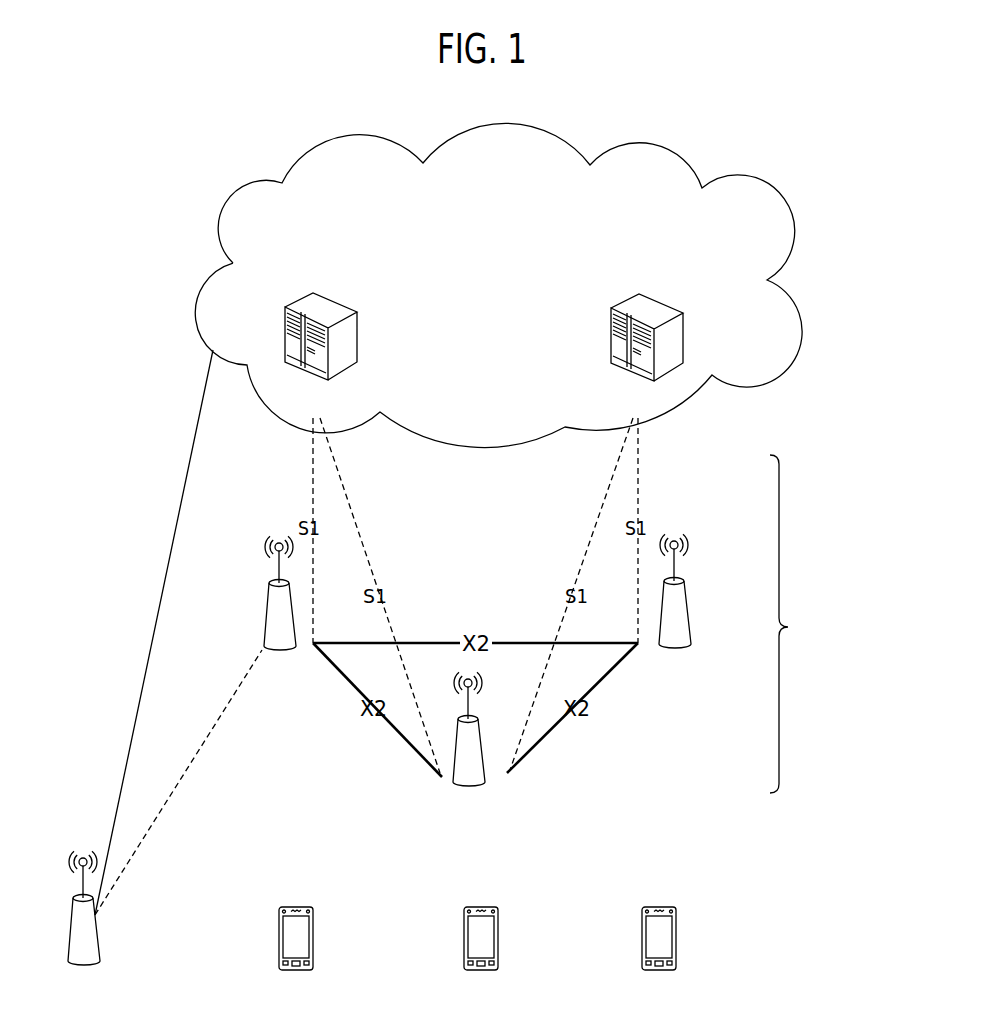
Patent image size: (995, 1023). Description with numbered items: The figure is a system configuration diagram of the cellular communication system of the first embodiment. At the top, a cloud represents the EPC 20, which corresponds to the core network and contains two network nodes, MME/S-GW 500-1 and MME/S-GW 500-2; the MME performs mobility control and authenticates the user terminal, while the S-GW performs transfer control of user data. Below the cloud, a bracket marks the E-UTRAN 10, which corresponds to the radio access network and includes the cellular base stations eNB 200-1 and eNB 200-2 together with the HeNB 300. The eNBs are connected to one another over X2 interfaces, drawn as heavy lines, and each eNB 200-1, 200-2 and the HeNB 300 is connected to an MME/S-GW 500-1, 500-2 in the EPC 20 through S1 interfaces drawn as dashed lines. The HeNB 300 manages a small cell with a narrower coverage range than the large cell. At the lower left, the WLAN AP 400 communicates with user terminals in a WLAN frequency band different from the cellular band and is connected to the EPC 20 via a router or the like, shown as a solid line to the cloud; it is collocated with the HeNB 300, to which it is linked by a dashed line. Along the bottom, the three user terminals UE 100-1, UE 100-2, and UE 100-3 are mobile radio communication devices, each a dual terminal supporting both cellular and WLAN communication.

The E-UTRAN 10 is at (826, 624).
The EPC 20 is at (683, 156).
The UE 100-1 is at (302, 906).
The UE 100-2 is at (485, 906).
The UE 100-3 is at (662, 906).
The eNB 200-1 is at (486, 756).
The eNB 200-2 is at (708, 587).
The HeNB 300 is at (266, 615).
The AP 400 is at (99, 935).
The MME/S-GW 500-1 is at (362, 280).
The MME/S-GW 500-2 is at (660, 303).